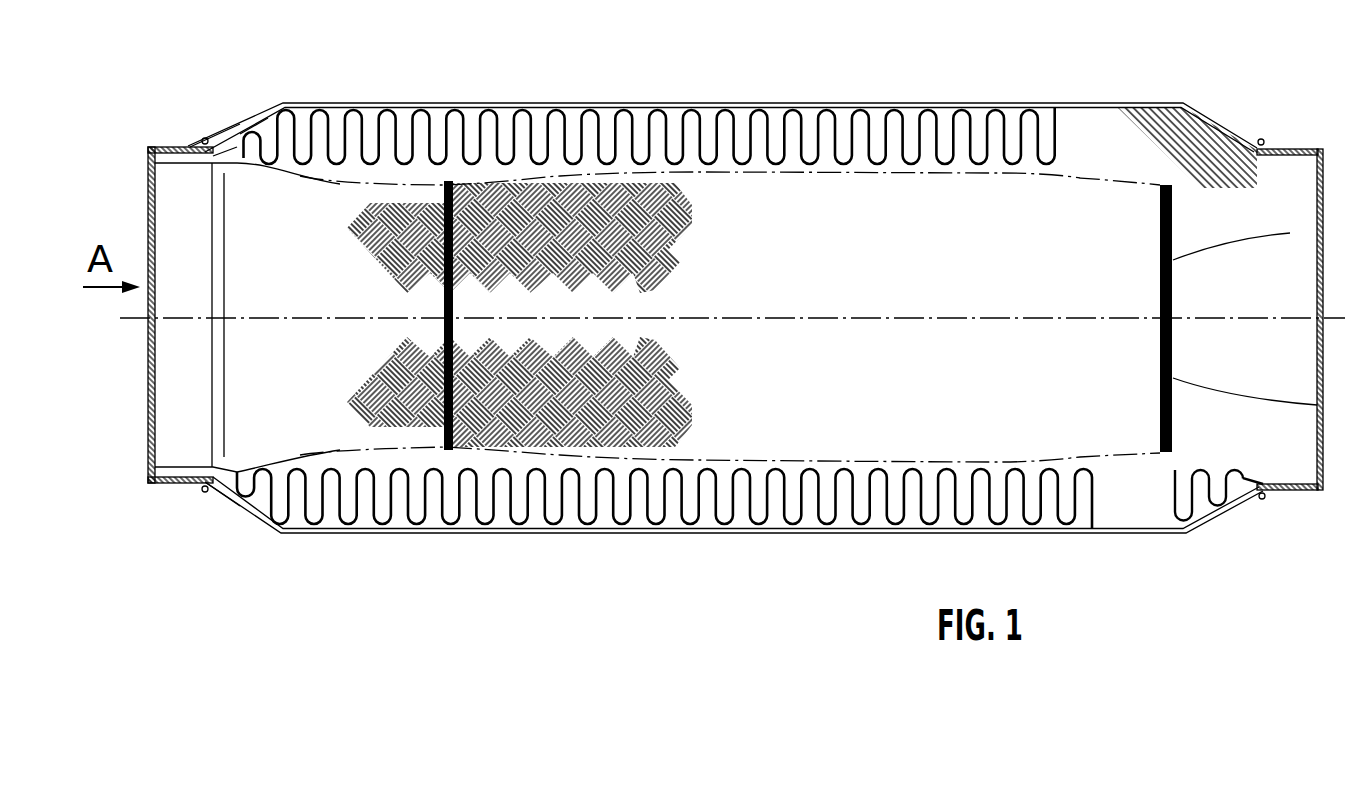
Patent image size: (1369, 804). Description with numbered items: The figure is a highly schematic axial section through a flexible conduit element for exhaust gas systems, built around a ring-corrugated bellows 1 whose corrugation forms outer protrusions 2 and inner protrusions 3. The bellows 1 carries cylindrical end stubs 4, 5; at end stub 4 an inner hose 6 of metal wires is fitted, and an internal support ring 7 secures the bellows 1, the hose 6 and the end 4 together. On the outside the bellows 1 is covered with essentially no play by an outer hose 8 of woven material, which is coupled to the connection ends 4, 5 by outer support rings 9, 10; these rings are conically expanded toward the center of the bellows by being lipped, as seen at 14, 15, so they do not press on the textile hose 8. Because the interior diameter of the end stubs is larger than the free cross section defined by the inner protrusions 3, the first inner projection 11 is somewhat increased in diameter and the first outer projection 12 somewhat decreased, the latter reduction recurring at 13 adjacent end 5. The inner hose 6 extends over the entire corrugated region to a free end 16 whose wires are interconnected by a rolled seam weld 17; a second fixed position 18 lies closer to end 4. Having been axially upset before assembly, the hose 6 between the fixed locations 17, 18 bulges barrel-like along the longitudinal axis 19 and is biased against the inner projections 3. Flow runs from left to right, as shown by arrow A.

The ring-corrugated bellows 1 is at (658, 130).
The outer protrusions 2 is at (537, 104).
The inner protrusions 3 is at (440, 157).
The cylindrical end stub 4 is at (148, 153).
The cylindrical end stub 5 is at (1293, 481).
The inner hose 6 is at (282, 217).
The internal support ring 7 is at (170, 412).
The outer hose 8 is at (1172, 122).
The outer support ring 9 is at (168, 143).
The outer support ring 10 is at (1290, 150).
The first inner projection 11 is at (232, 154).
The first outer projection 12 is at (260, 132).
The decreased-diameter outer projection 13 is at (1225, 510).
The lip 14 is at (205, 490).
The lip 15 is at (1262, 497).
The free end 16 is at (1105, 232).
The rolled seam weld 17 is at (1290, 233).
The second fixed position 18 is at (460, 420).
The longitudinal axis 19 is at (775, 320).